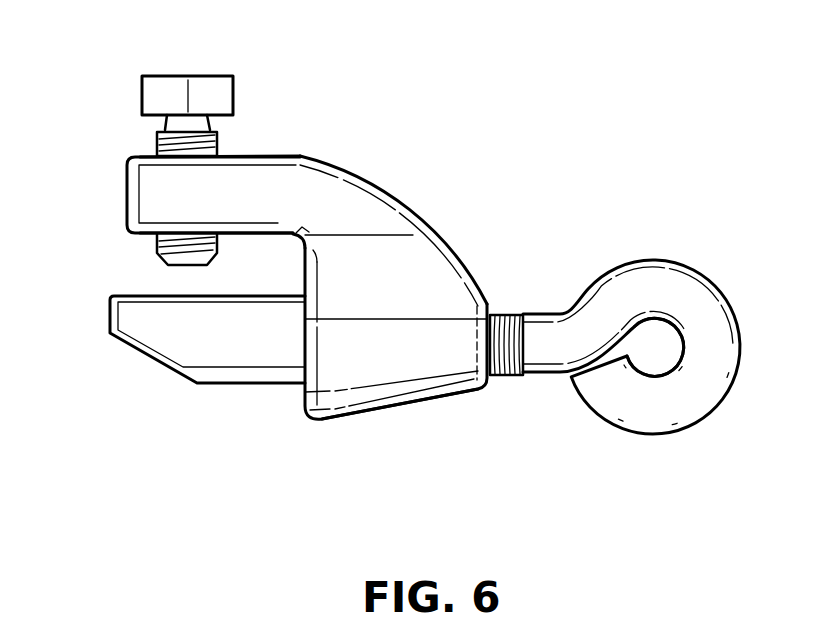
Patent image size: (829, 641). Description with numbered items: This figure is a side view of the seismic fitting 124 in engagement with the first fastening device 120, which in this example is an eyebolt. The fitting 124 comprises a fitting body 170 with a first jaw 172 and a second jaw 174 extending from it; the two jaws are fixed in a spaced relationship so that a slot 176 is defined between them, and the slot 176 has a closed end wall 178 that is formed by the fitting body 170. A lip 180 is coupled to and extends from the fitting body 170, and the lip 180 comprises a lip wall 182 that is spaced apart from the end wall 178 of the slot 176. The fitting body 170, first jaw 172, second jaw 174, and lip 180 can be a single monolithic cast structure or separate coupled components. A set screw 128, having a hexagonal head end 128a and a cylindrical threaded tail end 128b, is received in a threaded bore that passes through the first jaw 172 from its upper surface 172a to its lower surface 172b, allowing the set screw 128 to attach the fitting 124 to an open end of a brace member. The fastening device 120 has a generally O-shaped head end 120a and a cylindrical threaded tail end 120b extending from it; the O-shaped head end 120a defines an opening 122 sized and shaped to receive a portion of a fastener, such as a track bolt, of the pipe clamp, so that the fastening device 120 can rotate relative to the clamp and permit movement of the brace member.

The first fastening device 120 is at (603, 462).
The O-shaped head end 120a is at (688, 292).
The cylindrical threaded tail end 120b is at (505, 378).
The opening 122 is at (653, 345).
The fitting 124 is at (420, 184).
The set screw 128 is at (117, 77).
The hexagonal head end 128a is at (206, 90).
The cylindrical threaded tail end 128b is at (217, 148).
The fitting body 170 is at (427, 277).
The first jaw 172 is at (150, 195).
The upper surface 172a is at (141, 154).
The lower surface 172b is at (143, 238).
The second jaw 174 is at (157, 358).
The slot 176 is at (269, 255).
The end wall 178 is at (301, 273).
The lip 180 is at (307, 442).
The lip wall 182 is at (299, 403).